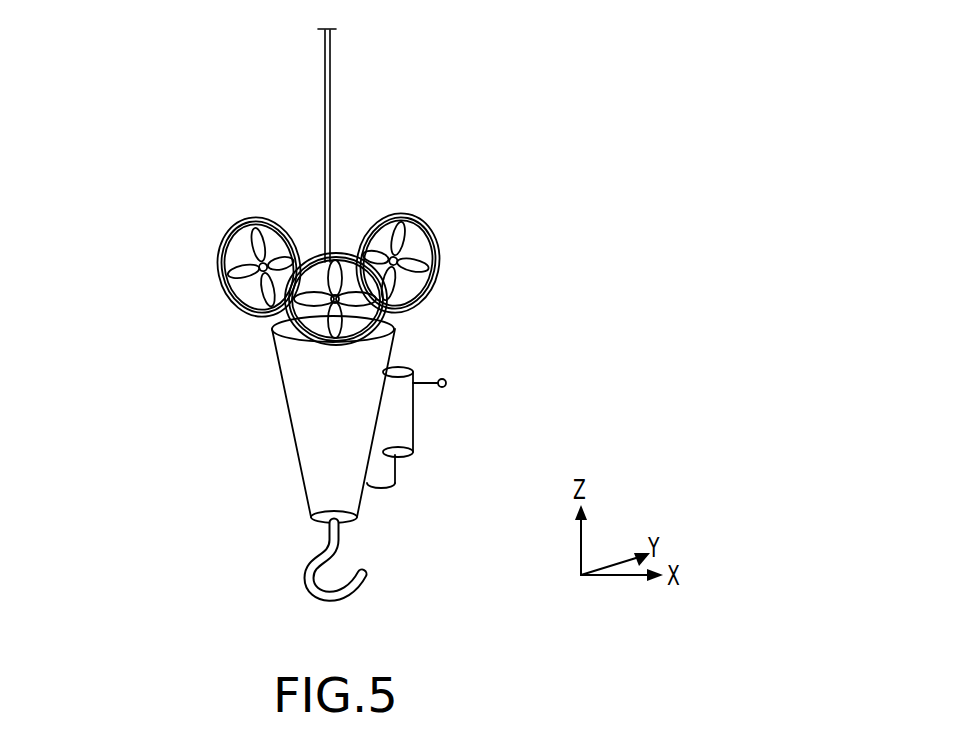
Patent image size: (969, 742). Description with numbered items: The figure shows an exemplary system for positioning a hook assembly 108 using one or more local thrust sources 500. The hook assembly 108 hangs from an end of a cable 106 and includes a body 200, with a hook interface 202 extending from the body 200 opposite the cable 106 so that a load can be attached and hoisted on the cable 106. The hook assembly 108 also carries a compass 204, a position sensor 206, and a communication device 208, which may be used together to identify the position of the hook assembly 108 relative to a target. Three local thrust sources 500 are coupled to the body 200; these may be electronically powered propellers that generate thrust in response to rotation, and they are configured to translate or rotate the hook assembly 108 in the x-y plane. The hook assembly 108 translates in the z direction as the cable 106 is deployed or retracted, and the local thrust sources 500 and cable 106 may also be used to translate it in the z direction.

The cable 106 is at (330, 97).
The hook assembly 108 is at (136, 360).
The body 200 is at (303, 458).
The hook interface 202 is at (360, 582).
The compass 204 is at (400, 437).
The position sensor 206 is at (383, 477).
The communication device 208 is at (442, 379).
The local thrust source 500 is at (220, 252).